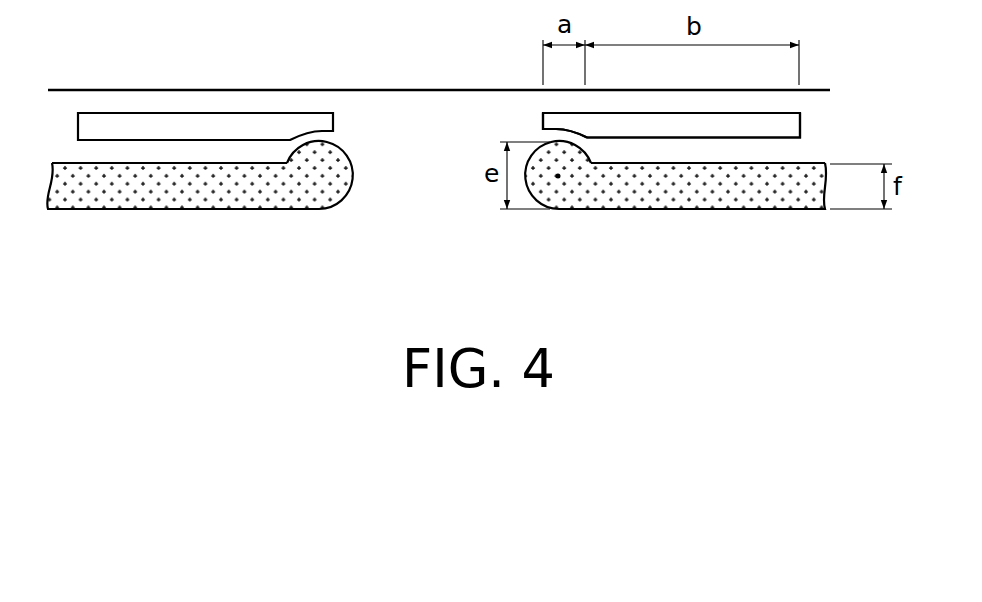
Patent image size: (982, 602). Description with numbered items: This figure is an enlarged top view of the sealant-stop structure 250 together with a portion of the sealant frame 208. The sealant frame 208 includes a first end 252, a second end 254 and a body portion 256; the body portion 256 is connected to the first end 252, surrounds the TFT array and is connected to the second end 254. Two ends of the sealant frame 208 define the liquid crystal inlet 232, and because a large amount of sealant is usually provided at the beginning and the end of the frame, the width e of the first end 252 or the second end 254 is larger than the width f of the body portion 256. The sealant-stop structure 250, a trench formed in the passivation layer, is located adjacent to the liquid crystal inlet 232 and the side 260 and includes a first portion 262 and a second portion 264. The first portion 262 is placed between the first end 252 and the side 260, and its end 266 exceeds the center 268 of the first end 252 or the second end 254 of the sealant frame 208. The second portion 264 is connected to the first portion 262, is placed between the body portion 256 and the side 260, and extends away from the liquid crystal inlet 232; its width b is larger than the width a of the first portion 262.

The sealant frame 208 is at (100, 233).
The liquid crystal inlet 232 is at (376, 114).
The sealant-stop structure 250 is at (806, 107).
The first end 252 is at (542, 192).
The second end 254 is at (342, 193).
The body portion 256 is at (243, 194).
The side 260 is at (439, 90).
The first portion 262 is at (563, 125).
The second portion 264 is at (785, 126).
The end 266 is at (542, 128).
The center 268 is at (558, 180).